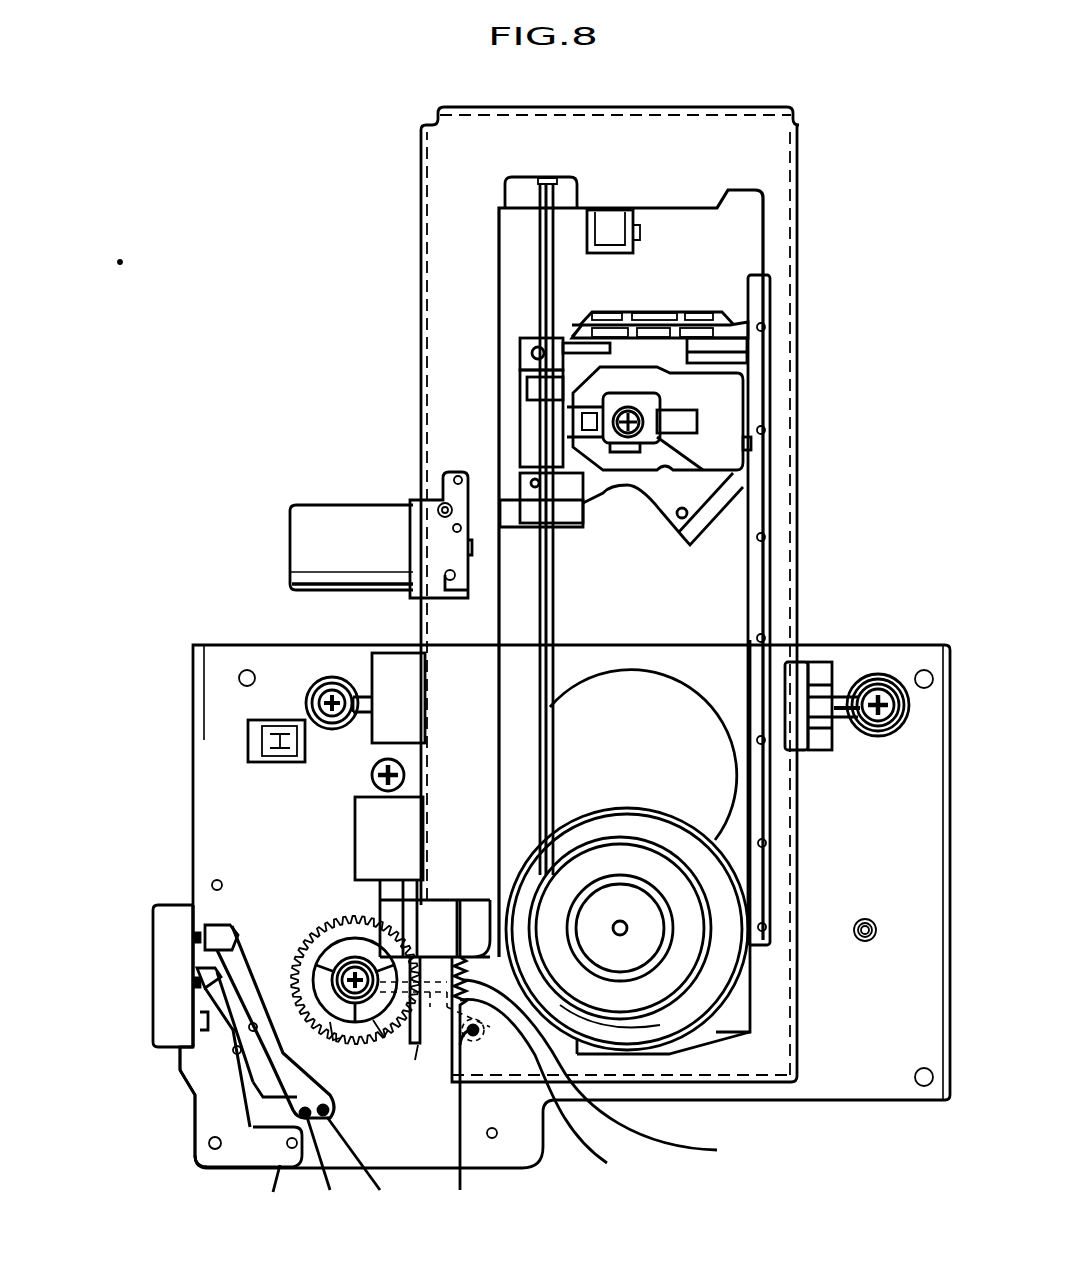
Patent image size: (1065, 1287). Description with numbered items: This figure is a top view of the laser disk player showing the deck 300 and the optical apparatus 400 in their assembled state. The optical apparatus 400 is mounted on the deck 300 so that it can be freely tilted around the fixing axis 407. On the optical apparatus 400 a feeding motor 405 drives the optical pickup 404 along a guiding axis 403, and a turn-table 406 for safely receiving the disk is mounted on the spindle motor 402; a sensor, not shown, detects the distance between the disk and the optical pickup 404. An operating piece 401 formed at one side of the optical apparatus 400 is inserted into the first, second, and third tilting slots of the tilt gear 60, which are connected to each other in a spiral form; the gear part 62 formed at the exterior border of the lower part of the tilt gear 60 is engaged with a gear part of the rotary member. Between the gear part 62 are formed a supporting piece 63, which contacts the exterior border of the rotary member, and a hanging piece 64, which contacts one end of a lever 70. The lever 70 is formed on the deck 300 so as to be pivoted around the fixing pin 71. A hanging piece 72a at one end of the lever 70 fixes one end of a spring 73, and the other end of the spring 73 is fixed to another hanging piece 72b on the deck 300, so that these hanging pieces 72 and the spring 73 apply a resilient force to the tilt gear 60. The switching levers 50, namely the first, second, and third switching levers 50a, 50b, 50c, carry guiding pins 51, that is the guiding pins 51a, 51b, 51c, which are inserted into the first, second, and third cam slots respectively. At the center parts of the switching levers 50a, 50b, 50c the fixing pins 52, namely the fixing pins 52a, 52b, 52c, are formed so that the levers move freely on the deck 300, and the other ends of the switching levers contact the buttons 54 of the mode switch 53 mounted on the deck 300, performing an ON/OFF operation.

The deck 300 is at (877, 645).
The optical apparatus 400 is at (540, 594).
The operating piece 401 is at (395, 930).
The spindle motor 402 is at (628, 800).
The guiding axis 403 is at (541, 575).
The optical pickup 404 is at (718, 398).
The feeding motor 405 is at (343, 520).
The turn-table 406 is at (690, 951).
The fixing axis 407 is at (350, 690).
The switching levers 50 is at (218, 1026).
The switching lever 50a is at (247, 1143).
The switching lever 50b is at (243, 1070).
The switching lever 50c is at (230, 925).
The guiding pins 51 is at (328, 1172).
The guiding pin 51a is at (282, 1170).
The guiding pin 51b is at (310, 1125).
The guiding pin 51c is at (330, 1120).
The fixing pins 52 is at (162, 1086).
The fixing pin 52a is at (192, 1160).
The fixing pin 52b is at (215, 1037).
The fixing pin 52c is at (205, 1012).
The mode switch 53 is at (170, 953).
The buttons 54 is at (190, 935).
The tilt gear 60 is at (340, 947).
The gear part 62 is at (305, 930).
The supporting piece 63 is at (372, 1032).
The hanging piece 64 is at (416, 1055).
The lever 70 is at (473, 1030).
The fixing pin 71 is at (460, 1190).
The hanging pieces 72 is at (521, 1013).
The hanging piece 72a is at (561, 1092).
The hanging piece 72b is at (457, 900).
The spring 73 is at (607, 1071).